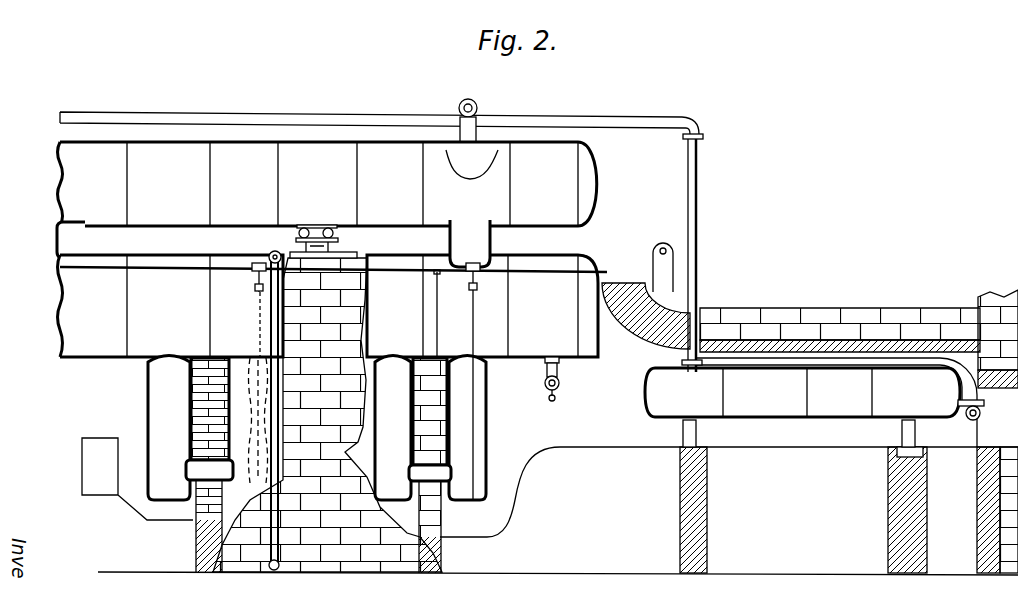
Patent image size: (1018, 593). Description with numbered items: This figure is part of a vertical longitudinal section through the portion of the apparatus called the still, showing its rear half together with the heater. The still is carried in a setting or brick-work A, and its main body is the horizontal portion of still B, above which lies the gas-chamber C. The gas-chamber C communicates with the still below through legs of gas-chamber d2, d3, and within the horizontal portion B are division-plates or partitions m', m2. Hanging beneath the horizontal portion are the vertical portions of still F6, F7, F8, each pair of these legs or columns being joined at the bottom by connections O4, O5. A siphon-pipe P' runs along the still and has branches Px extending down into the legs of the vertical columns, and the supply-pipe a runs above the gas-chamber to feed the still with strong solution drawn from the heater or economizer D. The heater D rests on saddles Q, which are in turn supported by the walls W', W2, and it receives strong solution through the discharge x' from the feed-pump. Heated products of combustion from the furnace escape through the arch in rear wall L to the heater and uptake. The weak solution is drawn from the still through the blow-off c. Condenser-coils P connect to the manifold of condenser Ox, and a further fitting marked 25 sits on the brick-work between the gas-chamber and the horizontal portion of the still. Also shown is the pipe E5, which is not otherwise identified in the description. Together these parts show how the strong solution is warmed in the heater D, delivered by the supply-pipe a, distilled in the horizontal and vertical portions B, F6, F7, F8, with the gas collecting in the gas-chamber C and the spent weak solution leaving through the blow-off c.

The supply-pipe a is at (352, 112).
The gas-chamber C is at (327, 184).
The leg of gas-chamber d2 is at (56, 243).
The manifold of condenser Ox is at (296, 241).
The valve 25 is at (340, 240).
The leg of gas-chamber d3 is at (470, 243).
The siphon-pipe P' is at (366, 267).
The horizontal portion of still B is at (328, 306).
The branches of siphon-pipe Px is at (480, 341).
The division-plate m' is at (242, 324).
The division-plate m2 is at (448, 313).
The arch in rear wall L is at (628, 320).
The pipe E5 is at (169, 428).
The vertical portion of still F6 is at (218, 465).
The vertical portion of still F7 is at (393, 428).
The vertical portion of still F8 is at (460, 408).
The blow-off c is at (560, 384).
The condenser-coils P is at (729, 471).
The setting or brick-work of still A is at (327, 415).
The connection between legs O4 is at (209, 470).
The connection between legs O5 is at (430, 473).
The heater or economizer D is at (802, 392).
The saddles Q is at (697, 437).
The discharge to heater x' is at (982, 412).
The wall supporting saddles and heater W' is at (708, 510).
The wall supporting saddles and heater W2 is at (884, 510).